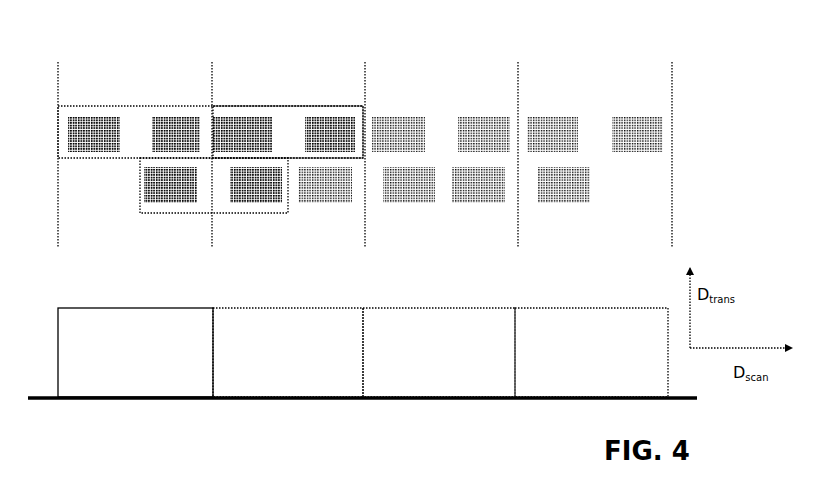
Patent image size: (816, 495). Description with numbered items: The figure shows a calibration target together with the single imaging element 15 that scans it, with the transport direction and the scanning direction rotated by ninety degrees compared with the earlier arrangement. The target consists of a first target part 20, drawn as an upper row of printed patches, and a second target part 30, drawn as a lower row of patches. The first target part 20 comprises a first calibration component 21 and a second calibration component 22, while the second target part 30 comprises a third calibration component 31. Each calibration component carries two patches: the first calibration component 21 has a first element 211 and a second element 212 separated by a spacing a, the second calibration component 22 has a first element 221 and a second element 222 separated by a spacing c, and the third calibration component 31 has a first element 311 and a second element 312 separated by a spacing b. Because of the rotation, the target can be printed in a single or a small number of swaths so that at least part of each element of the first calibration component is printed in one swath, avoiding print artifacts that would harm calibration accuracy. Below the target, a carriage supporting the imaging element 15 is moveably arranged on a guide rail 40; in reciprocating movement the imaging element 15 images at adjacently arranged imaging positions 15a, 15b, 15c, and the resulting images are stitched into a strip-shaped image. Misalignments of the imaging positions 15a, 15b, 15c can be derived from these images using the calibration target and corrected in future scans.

The first target part 20 is at (693, 136).
The second target part 30 is at (693, 188).
The first calibration component 21 is at (112, 158).
The second calibration component 22 is at (252, 105).
The first element 211 is at (73, 134).
The second element 212 is at (195, 134).
The first element 221 is at (248, 132).
The second element 222 is at (328, 135).
The third calibration component 31 is at (290, 203).
The first element 311 is at (167, 183).
The second element 312 is at (258, 183).
The imaging element 15 is at (135, 352).
The imaging position 15a is at (288, 352).
The imaging position 15b is at (439, 352).
The imaging position 15c is at (591, 352).
The guide rail 40 is at (202, 401).